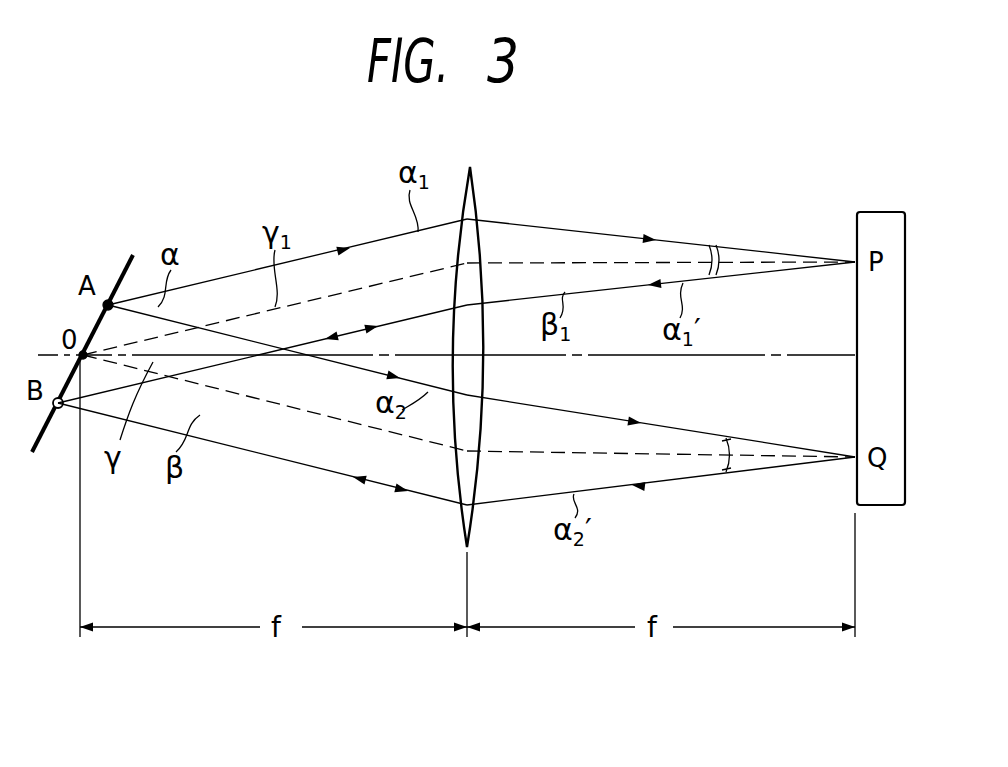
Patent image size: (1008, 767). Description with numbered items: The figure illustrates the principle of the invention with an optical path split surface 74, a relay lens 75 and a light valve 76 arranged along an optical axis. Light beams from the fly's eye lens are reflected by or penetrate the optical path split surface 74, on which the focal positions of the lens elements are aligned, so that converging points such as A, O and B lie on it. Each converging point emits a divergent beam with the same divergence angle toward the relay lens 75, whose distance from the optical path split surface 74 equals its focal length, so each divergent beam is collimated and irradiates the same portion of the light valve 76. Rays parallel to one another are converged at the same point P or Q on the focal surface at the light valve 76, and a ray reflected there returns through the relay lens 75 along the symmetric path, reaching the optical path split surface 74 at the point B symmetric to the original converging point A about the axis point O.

The optical path split surface 74 is at (127, 258).
The relay lens 75 is at (478, 192).
The light valve 76 is at (856, 226).